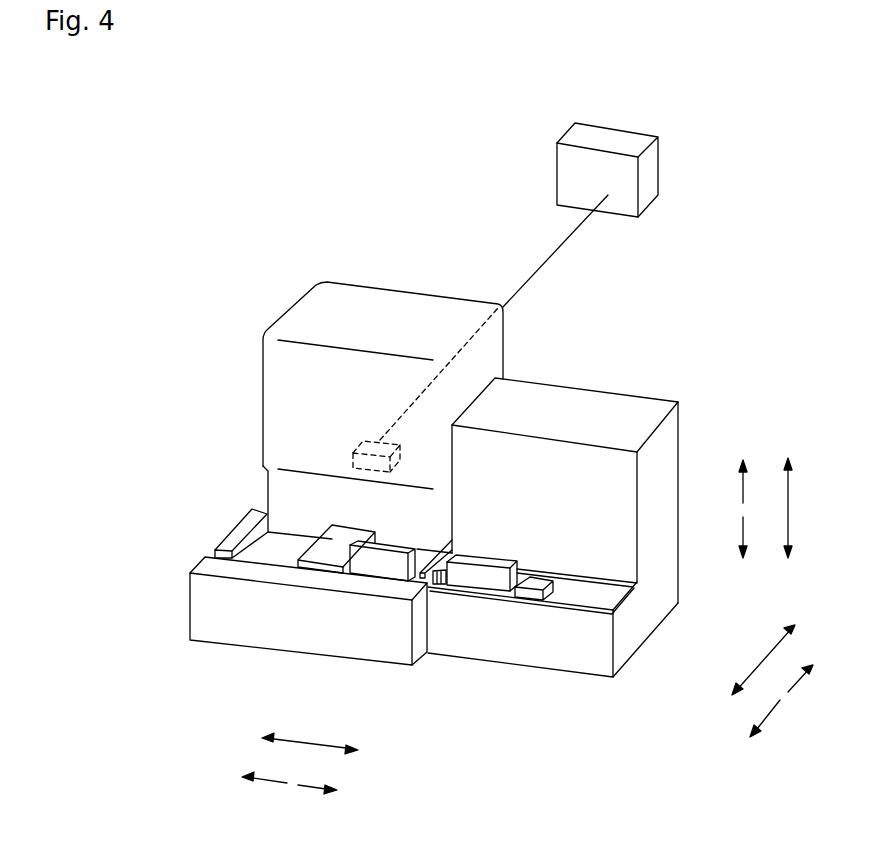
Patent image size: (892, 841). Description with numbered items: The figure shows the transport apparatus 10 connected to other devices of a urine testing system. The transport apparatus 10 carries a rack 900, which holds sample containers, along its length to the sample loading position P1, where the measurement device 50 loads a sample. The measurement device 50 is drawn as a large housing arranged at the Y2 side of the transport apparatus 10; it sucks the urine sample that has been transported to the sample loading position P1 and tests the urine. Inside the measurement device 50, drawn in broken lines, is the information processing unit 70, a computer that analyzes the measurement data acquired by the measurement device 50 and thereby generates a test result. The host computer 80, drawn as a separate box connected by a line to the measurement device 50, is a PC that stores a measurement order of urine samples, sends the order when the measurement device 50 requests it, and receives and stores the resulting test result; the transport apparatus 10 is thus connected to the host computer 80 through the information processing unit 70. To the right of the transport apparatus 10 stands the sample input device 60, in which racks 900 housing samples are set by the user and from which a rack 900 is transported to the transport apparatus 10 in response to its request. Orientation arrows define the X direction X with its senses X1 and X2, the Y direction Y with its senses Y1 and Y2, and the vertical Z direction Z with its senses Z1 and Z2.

The transport apparatus 10 is at (222, 537).
The measurement device 50 is at (407, 307).
The sample input device 60 is at (592, 392).
The information processing unit 70 is at (366, 446).
The host computer 80 is at (609, 137).
The rack 900 is at (385, 566).
The sample loading position P1 is at (348, 528).
The X direction X is at (310, 736).
The X1 direction X1 is at (264, 768).
The X2 direction X2 is at (317, 775).
The Y direction Y is at (763, 660).
The Y1 direction Y1 is at (760, 715).
The Y2 direction Y2 is at (791, 675).
The Z direction Z is at (797, 508).
The Z1 direction Z1 is at (757, 482).
The Z2 direction Z2 is at (757, 537).